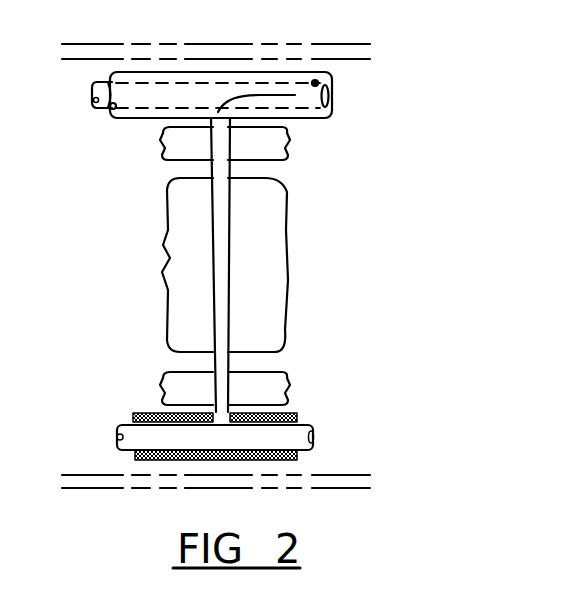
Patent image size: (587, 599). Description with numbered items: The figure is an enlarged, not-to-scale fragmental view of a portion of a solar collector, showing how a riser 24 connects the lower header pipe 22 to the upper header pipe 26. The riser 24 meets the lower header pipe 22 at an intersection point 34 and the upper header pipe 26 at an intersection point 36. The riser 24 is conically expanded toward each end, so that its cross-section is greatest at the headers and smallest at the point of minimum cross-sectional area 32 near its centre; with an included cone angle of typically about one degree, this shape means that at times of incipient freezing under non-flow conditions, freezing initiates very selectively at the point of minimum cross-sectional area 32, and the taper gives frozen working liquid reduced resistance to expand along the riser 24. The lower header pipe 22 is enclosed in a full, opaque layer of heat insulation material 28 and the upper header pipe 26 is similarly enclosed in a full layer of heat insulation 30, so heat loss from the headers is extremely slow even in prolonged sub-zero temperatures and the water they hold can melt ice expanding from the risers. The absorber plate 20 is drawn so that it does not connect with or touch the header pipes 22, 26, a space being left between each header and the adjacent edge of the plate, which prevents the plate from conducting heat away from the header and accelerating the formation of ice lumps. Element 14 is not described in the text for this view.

The web 14 is at (365, 53).
The heat insulation 30 is at (315, 82).
The intersection point 36 is at (328, 92).
The upper header pipe 26 is at (295, 95).
The absorber plate 20 is at (287, 213).
The point of minimum cross-sectional area 32 is at (228, 266).
The riser 24 is at (229, 329).
The lower header pipe 22 is at (313, 430).
The intersection point 34 is at (218, 420).
The heat insulation material 28 is at (297, 458).